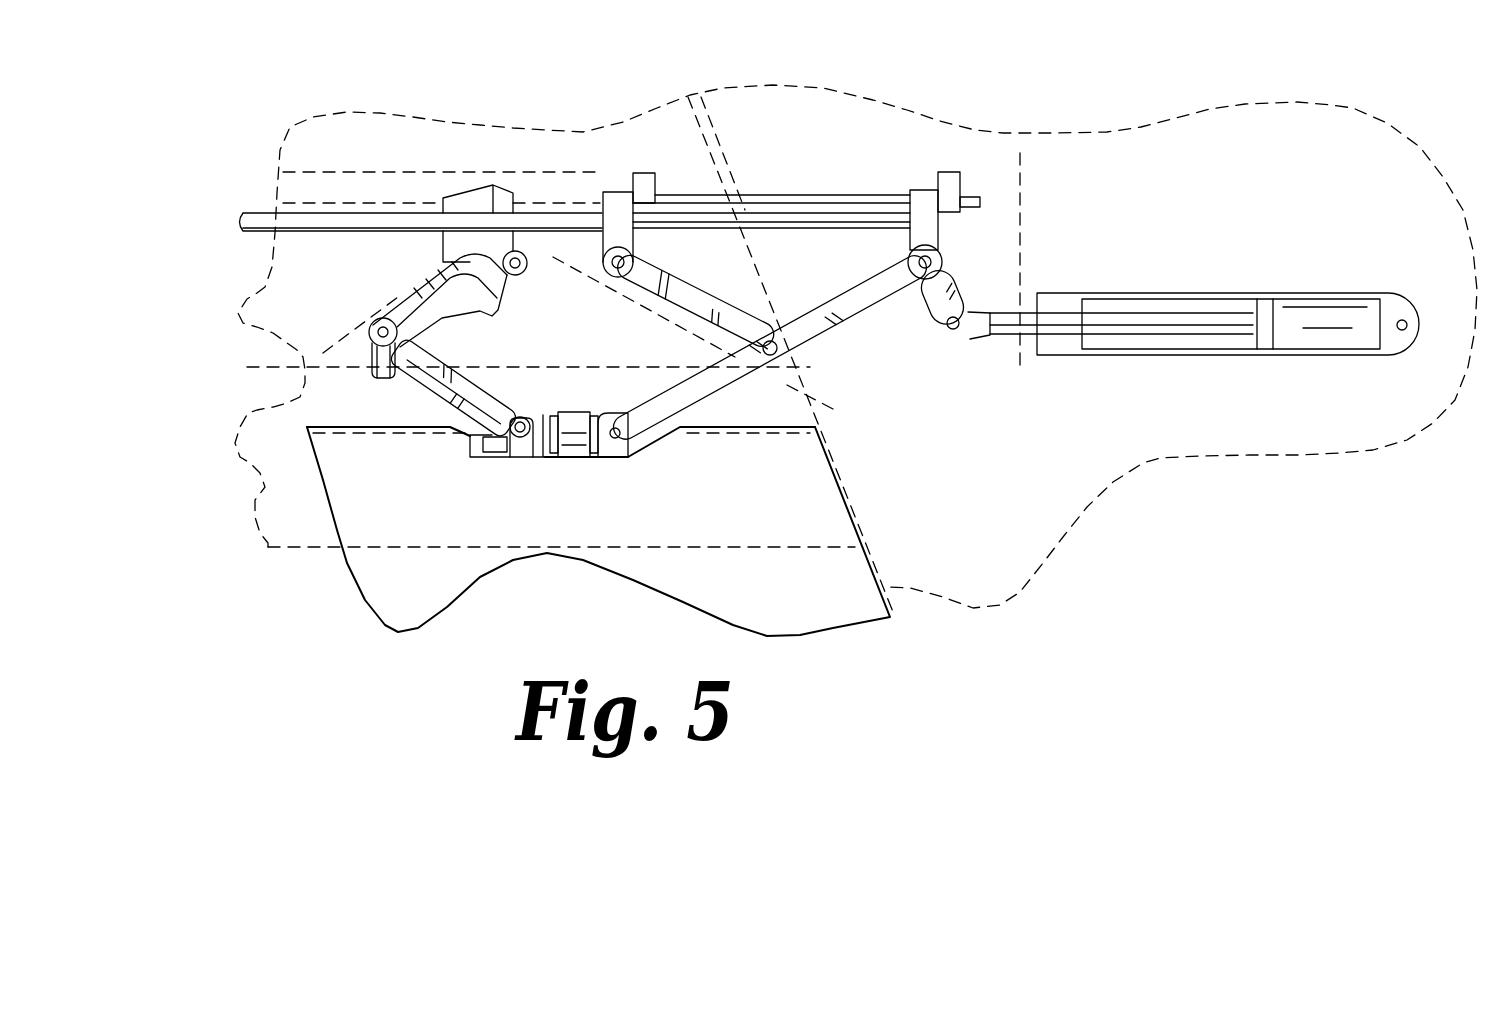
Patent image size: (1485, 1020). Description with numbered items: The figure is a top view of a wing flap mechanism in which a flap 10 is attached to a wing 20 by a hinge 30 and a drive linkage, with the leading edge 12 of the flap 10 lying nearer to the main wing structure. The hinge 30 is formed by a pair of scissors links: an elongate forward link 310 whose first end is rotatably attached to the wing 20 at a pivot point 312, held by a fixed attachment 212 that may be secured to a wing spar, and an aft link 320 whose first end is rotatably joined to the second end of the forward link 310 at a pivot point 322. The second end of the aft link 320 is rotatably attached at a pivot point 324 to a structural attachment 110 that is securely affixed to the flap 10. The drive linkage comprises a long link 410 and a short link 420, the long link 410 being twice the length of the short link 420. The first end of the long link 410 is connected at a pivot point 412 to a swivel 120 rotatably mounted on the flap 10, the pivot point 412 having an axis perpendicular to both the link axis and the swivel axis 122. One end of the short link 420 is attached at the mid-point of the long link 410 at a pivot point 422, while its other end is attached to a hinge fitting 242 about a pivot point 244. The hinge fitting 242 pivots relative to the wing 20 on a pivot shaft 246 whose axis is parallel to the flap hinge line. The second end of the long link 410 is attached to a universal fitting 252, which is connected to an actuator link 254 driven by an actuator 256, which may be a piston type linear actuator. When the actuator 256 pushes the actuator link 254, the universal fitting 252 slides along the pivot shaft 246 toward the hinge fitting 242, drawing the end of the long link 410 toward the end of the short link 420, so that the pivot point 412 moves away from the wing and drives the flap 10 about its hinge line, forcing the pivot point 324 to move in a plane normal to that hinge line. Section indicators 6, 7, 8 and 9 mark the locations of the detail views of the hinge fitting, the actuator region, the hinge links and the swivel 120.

The flap 10 is at (541, 491).
The leading edge 12 is at (317, 422).
The wing 20 is at (1207, 173).
The hinge 30 is at (416, 391).
The structural attachment 110 is at (562, 480).
The swivel 120 is at (608, 410).
The swivel axis 122 is at (588, 463).
The fixed attachment 212 is at (438, 247).
The hinge fitting 242 is at (580, 168).
The pivot point 244 is at (601, 235).
The pivot shaft 246 is at (837, 188).
The universal fitting 252 is at (946, 248).
The actuator link 254 is at (252, 212).
The actuator 256 is at (1212, 290).
The forward link 310 is at (410, 293).
The pivot point 312 is at (528, 272).
The aft link 320 is at (435, 417).
The pivot point 322 is at (388, 348).
The pivot point 324 is at (518, 463).
The long link 410 is at (890, 310).
The pivot point 412 is at (632, 458).
The short link 420 is at (700, 280).
The pivot point 422 is at (772, 327).
The section line 6- 6 is at (559, 243).
The section line 7- 7 is at (1020, 153).
The section line 8- 8 is at (430, 273).
The section line 9- 9 is at (540, 430).